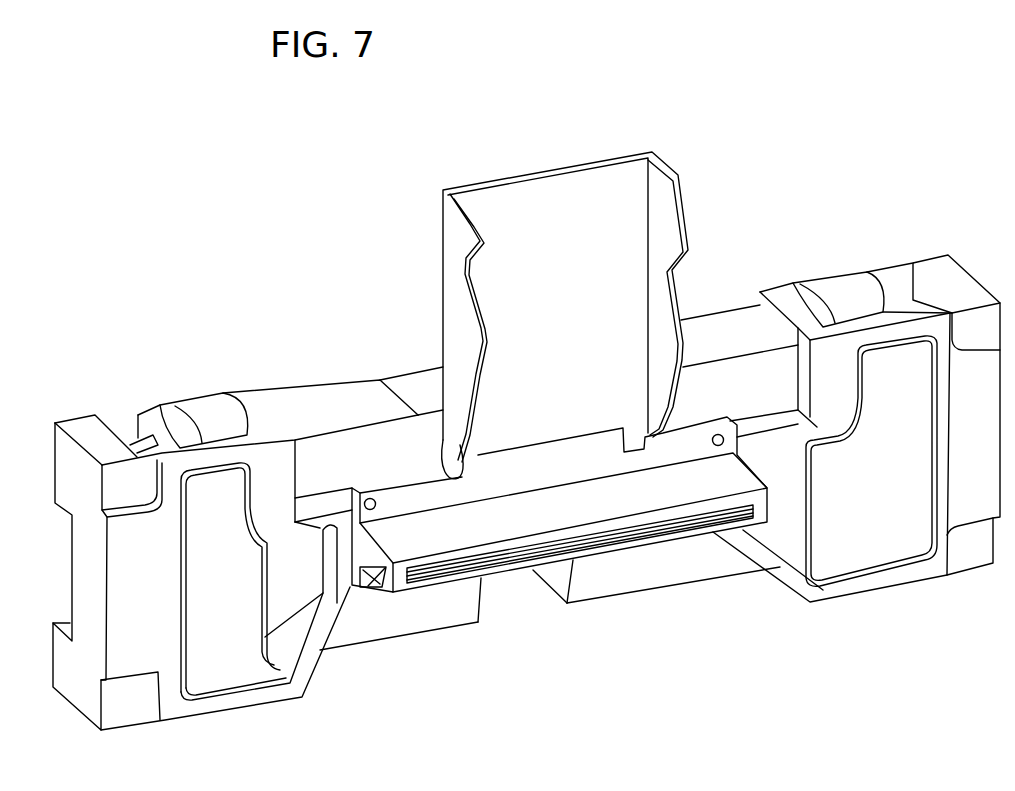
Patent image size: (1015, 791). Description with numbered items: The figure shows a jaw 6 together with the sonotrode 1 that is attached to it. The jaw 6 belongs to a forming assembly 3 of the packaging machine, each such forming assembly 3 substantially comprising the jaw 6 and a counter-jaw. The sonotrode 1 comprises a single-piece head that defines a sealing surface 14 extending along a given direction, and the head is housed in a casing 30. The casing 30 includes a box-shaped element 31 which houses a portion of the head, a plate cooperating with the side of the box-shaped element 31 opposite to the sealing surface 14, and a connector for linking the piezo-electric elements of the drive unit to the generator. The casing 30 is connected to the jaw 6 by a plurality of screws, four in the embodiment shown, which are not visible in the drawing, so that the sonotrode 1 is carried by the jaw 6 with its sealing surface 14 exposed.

The sonotrode 1 is at (726, 386).
The forming assembly 3 is at (294, 248).
The jaw 6 is at (261, 370).
The sealing surface 14 is at (551, 554).
The casing 30 is at (417, 535).
The box-shaped element 31 is at (368, 590).